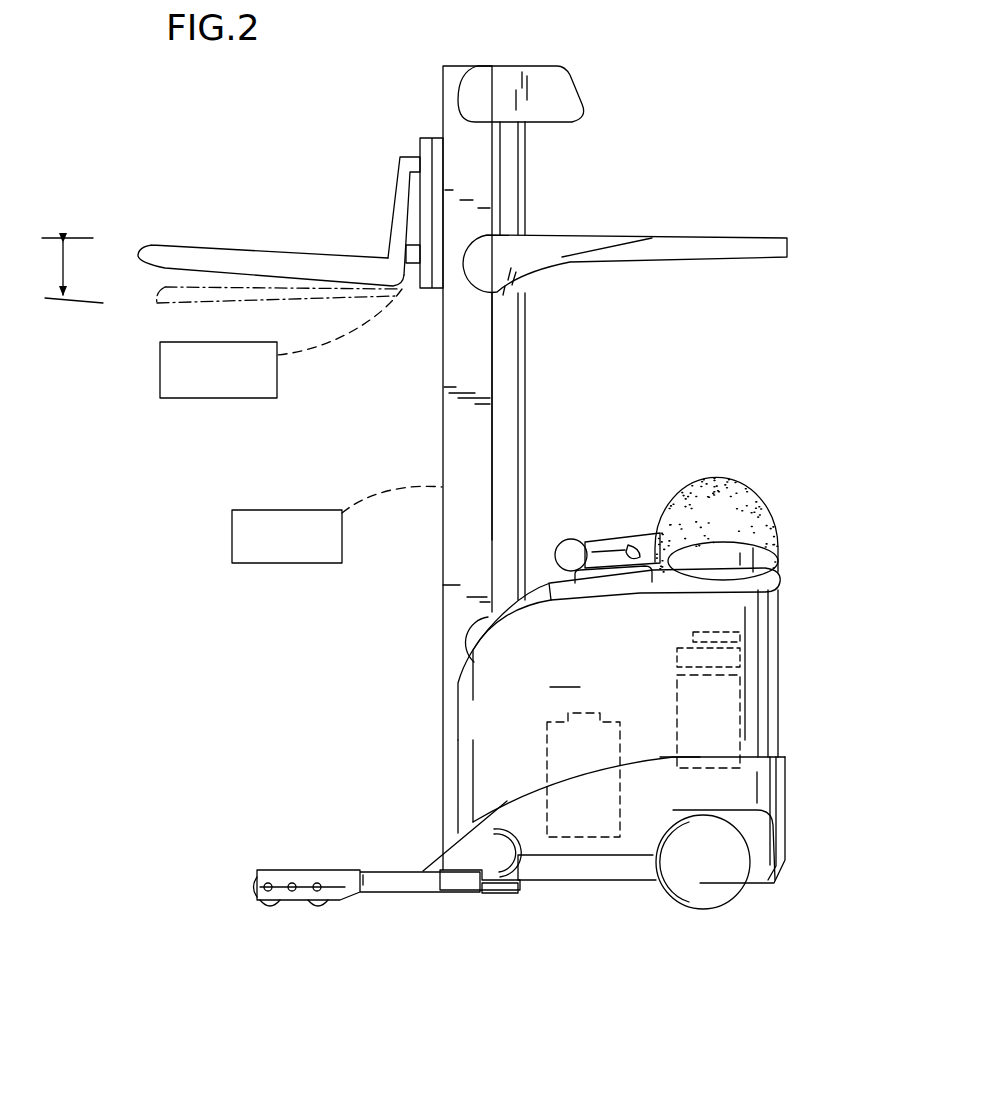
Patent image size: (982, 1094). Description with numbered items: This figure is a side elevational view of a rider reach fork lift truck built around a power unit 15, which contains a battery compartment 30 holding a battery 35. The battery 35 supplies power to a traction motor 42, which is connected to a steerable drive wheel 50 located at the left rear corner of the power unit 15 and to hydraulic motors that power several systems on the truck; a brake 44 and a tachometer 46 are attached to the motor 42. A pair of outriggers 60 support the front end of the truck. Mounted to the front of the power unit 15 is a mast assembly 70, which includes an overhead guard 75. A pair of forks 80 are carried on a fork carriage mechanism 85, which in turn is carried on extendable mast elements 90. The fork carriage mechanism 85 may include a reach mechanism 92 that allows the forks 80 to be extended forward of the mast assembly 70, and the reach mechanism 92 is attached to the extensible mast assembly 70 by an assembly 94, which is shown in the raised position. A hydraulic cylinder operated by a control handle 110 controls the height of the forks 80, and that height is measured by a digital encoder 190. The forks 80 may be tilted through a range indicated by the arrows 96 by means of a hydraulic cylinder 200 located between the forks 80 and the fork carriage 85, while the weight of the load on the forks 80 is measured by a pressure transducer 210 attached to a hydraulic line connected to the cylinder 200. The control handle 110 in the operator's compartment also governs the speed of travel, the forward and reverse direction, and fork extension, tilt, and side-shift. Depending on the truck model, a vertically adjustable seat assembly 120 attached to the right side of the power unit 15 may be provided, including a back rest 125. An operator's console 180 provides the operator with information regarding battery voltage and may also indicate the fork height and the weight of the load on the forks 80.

The power unit 15 is at (806, 763).
The battery compartment 30 is at (604, 729).
The battery 35 is at (555, 763).
The traction motor 42 is at (732, 715).
The brake 44 is at (740, 658).
The tachometer 46 is at (723, 638).
The steerable drive wheel 50 is at (725, 882).
The outriggers 60 is at (305, 877).
The mast assembly 70 is at (450, 555).
The overhead guard 75 is at (697, 238).
The forks 80 is at (239, 255).
The fork carriage mechanism 85 is at (397, 192).
The extendable mast elements 90 is at (522, 185).
The reach mechanism 92 is at (418, 147).
The assembly 94 is at (441, 138).
The arrows 96 is at (80, 237).
The control handle 110 is at (612, 543).
The seat assembly 120 is at (768, 483).
The back rest 125 is at (703, 483).
The operator's console 180 is at (775, 548).
The digital encoder 190 is at (297, 555).
The hydraulic cylinder 200 is at (413, 264).
The pressure transducer 210 is at (207, 390).